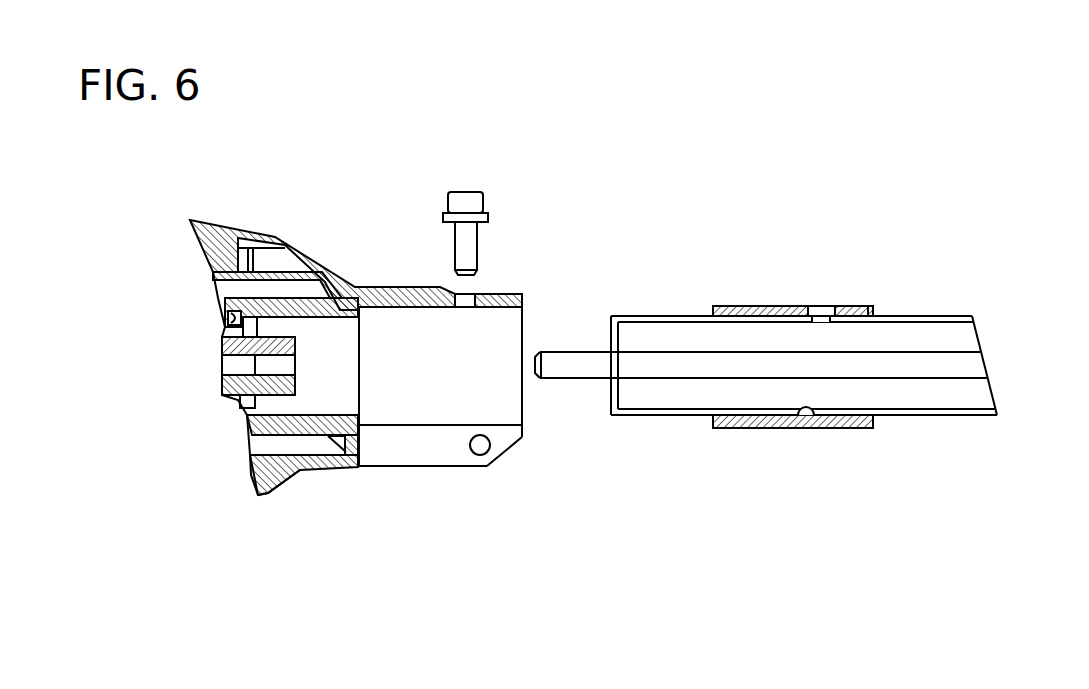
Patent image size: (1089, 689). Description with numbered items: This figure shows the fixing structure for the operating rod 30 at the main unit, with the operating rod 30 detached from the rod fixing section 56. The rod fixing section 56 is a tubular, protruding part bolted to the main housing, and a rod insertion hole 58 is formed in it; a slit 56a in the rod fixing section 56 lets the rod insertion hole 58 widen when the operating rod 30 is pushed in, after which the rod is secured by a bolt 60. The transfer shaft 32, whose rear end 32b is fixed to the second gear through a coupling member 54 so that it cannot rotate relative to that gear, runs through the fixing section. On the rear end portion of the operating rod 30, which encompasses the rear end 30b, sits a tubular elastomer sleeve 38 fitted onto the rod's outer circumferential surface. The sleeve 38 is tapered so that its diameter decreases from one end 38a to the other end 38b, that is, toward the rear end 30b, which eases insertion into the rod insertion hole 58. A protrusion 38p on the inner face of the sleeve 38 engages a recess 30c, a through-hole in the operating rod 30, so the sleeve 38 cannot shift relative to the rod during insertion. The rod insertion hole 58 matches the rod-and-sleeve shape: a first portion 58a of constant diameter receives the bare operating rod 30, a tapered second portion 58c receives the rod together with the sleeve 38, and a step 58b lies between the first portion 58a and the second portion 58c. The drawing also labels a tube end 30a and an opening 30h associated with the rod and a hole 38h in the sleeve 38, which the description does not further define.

The operating rod 30 is at (950, 316).
The first end of tube 30a is at (526, 292).
The rear end of the operating rod 30b is at (611, 318).
The recess 30c is at (808, 412).
The hole of tube 30h is at (826, 316).
The transfer shaft 32 is at (975, 368).
The rear end of the transfer shaft 32b is at (528, 385).
The sleeve 38 is at (758, 428).
The one end of the sleeve 38a is at (870, 428).
The other end of the sleeve 38b is at (706, 428).
The hole of collar 38h is at (811, 306).
The protrusion 38p is at (815, 428).
The coupling member 54 is at (276, 336).
The rod fixing section 56 is at (357, 292).
The slit 56a is at (468, 458).
The rod insertion hole 58 is at (360, 507).
The first portion 58a is at (310, 470).
The step 58b is at (372, 420).
The second portion 58c is at (435, 486).
The bolt 60 is at (471, 205).